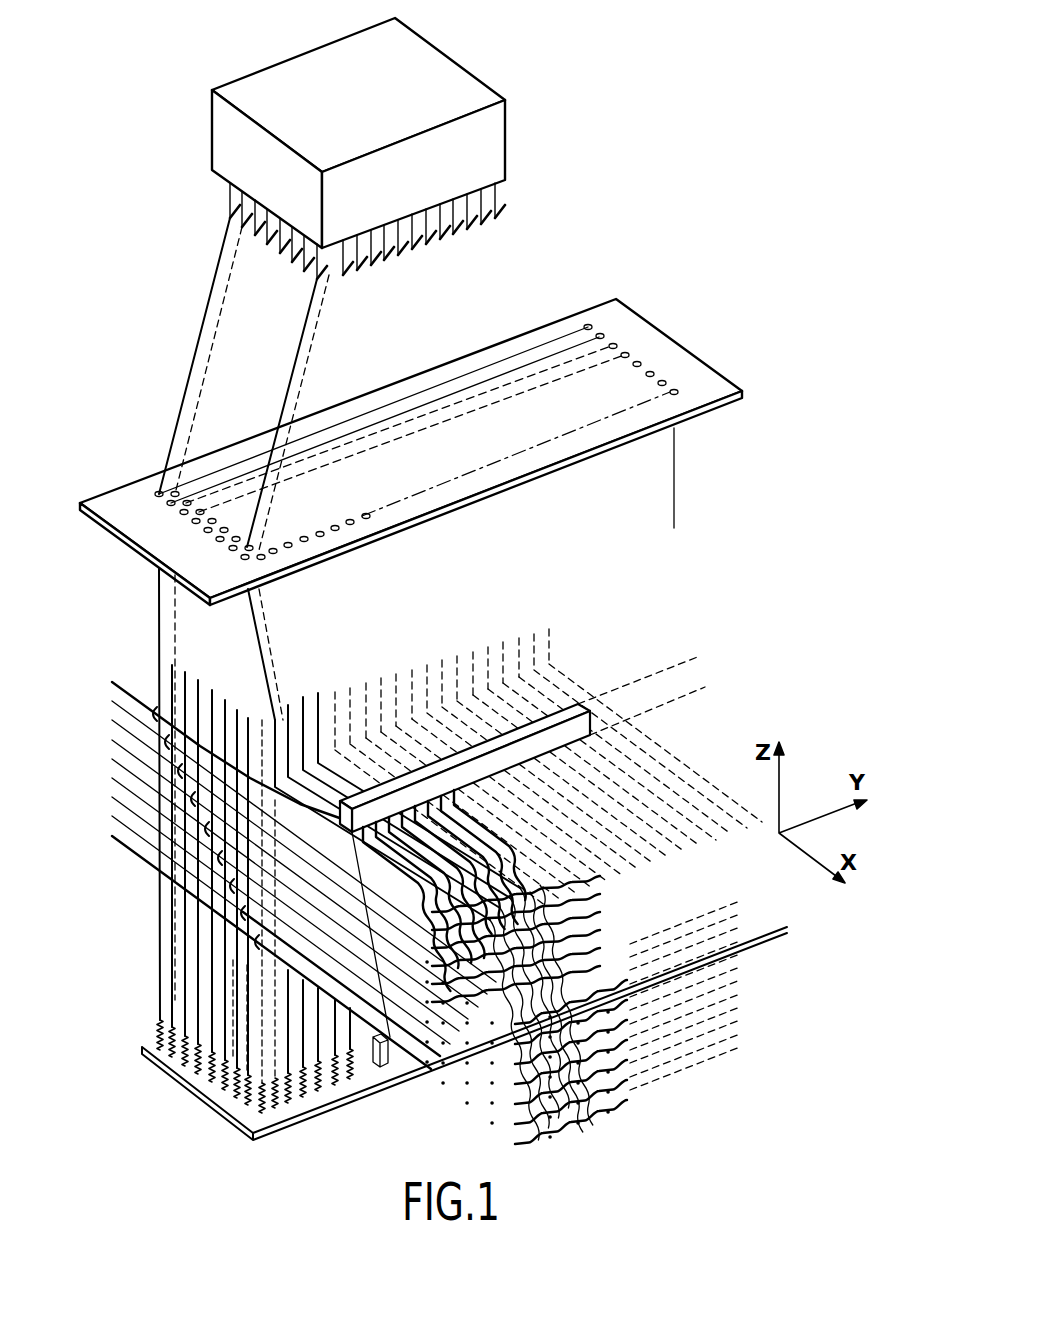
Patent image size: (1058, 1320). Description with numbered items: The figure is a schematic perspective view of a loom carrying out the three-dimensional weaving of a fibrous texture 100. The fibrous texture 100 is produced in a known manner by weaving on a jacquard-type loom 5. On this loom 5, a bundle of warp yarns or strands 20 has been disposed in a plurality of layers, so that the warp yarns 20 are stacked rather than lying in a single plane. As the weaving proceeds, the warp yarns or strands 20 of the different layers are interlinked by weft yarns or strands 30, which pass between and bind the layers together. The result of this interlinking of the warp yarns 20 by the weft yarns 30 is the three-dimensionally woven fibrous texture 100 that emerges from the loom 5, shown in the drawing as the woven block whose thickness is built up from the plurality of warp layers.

The jacquard-type loom 5 is at (648, 186).
The warp yarns or strands 20 is at (316, 918).
The weft yarns or strands 30 is at (543, 913).
The fibrous texture 100 is at (753, 915).